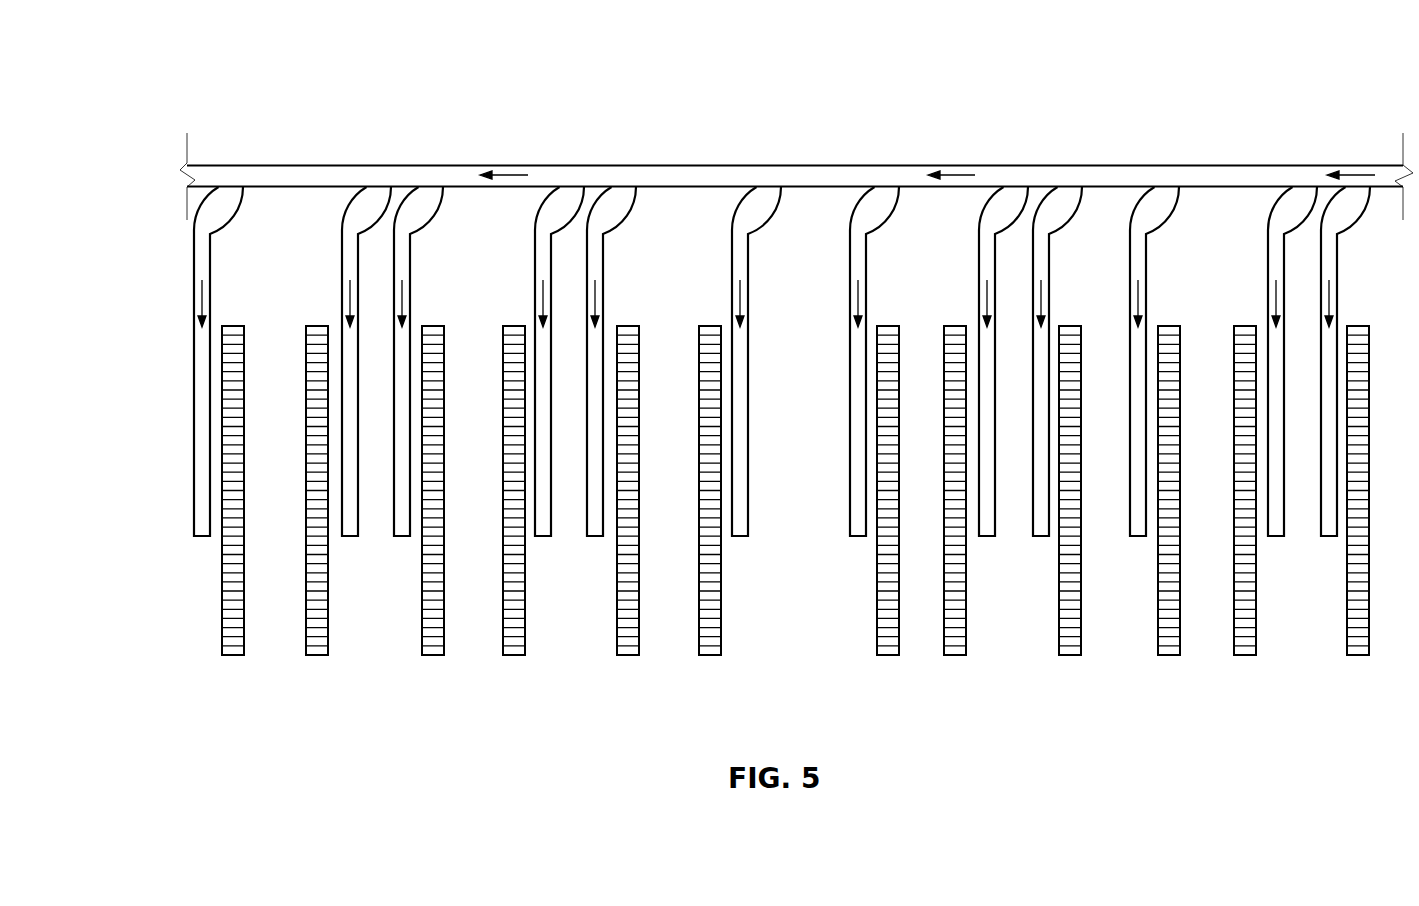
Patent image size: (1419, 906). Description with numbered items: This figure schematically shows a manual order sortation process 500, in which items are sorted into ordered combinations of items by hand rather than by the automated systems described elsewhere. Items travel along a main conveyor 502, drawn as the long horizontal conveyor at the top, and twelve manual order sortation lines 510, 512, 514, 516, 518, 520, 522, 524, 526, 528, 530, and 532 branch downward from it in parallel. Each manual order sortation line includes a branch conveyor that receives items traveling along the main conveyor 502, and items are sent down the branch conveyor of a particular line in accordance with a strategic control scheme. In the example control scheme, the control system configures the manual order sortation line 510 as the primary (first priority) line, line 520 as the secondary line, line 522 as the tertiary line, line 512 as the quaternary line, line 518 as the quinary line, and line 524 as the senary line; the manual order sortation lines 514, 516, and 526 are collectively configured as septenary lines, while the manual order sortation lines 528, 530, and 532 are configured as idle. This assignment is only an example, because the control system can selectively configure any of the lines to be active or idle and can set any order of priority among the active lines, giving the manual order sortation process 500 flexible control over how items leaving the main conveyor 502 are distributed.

The manual order sortation process 500 is at (1032, 88).
The main conveyor 502 is at (679, 165).
The manual order sortation line 510 is at (202, 628).
The manual order sortation line 512 is at (341, 627).
The manual order sortation line 514 is at (408, 634).
The manual order sortation line 516 is at (535, 626).
The manual order sortation line 518 is at (604, 632).
The manual order sortation line 520 is at (735, 627).
The manual order sortation line 522 is at (862, 623).
The manual order sortation line 524 is at (987, 622).
The manual order sortation line 526 is at (1047, 626).
The manual order sortation line 528 is at (1143, 623).
The manual order sortation line 530 is at (1267, 624).
The manual order sortation line 532 is at (1338, 623).